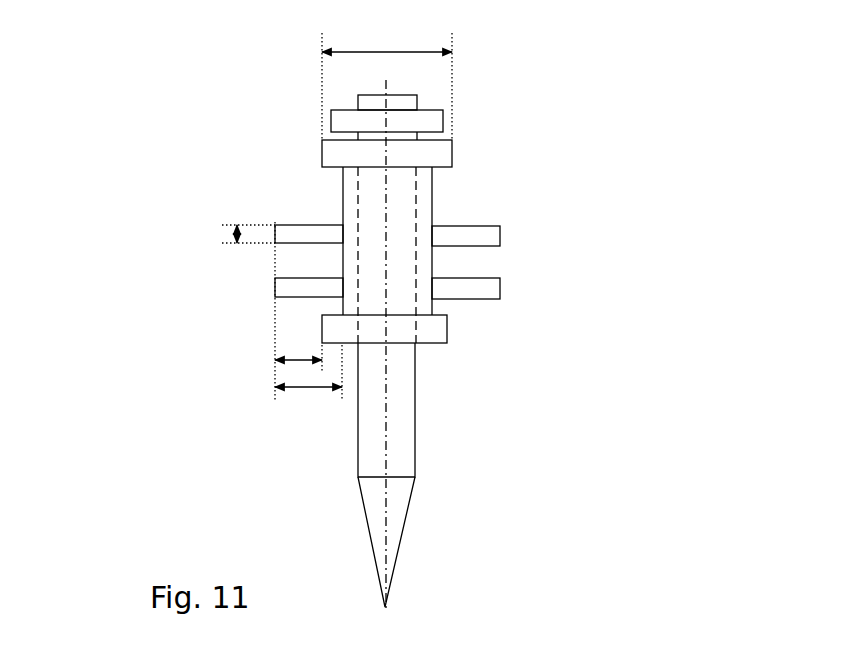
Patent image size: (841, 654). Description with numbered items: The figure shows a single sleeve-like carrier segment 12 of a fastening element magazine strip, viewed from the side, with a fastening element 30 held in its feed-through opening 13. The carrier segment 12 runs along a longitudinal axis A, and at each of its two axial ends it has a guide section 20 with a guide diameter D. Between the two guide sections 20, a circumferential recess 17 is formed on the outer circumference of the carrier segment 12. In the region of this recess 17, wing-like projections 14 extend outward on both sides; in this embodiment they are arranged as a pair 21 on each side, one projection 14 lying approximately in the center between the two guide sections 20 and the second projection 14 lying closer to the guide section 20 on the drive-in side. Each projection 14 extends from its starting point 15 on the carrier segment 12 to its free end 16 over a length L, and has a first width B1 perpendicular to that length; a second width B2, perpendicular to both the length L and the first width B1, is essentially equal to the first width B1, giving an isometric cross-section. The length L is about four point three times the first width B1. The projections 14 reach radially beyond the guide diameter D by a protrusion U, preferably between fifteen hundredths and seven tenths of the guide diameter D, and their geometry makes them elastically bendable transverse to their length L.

The carrier segment 12 is at (433, 188).
The feed-through opening 13 is at (358, 270).
The projection 14 is at (488, 235).
The starting point 15 is at (338, 221).
The free end 16 is at (268, 283).
The circumferential recess 17 is at (437, 207).
The guide section 20 is at (443, 155).
The pair of projections 21 is at (278, 276).
The fastening element 30 is at (408, 383).
The longitudinal axis A is at (385, 448).
The first width B1 is at (233, 231).
The second width B2 is at (229, 6).
The guide diameter D is at (352, 52).
The protrusion U is at (302, 360).
The length L is at (297, 387).